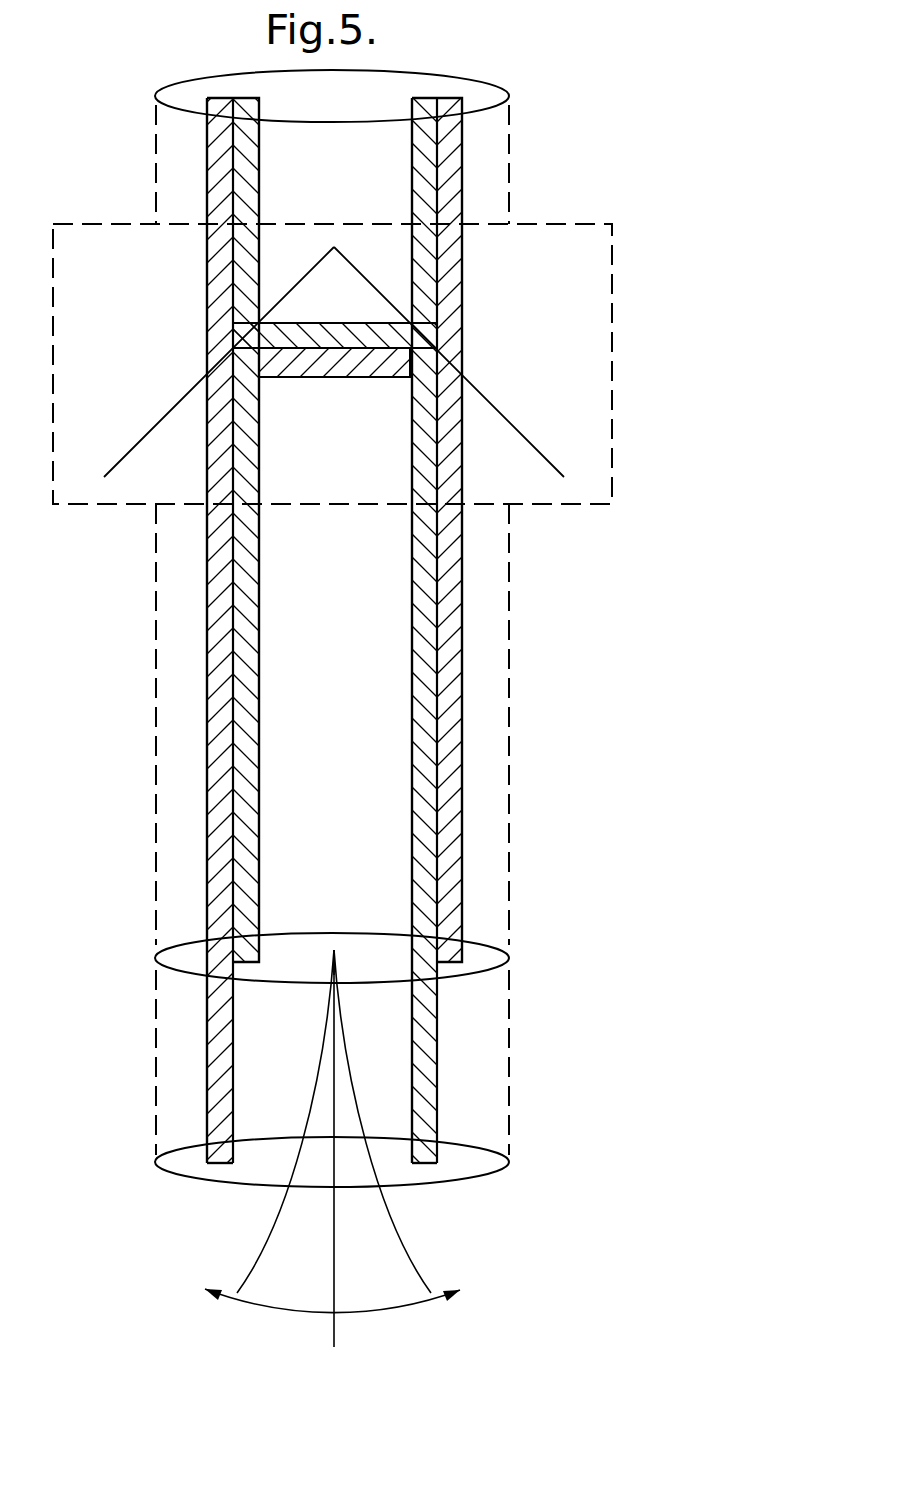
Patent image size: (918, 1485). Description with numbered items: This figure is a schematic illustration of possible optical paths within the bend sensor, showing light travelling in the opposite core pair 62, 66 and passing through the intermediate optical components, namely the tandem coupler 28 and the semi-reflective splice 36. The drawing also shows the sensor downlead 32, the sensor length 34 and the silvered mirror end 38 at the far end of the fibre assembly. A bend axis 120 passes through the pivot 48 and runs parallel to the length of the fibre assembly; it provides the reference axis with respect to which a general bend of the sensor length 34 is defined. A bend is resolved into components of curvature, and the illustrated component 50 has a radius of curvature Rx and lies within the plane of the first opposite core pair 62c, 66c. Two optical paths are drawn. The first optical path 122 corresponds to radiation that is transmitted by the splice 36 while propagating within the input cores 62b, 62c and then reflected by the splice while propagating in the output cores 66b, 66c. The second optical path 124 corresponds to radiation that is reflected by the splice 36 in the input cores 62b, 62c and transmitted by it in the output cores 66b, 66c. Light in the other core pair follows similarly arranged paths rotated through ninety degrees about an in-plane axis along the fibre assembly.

The tandem coupler 28 is at (614, 382).
The sensor downlead 32 is at (153, 756).
The sensor length 34 is at (153, 1008).
The semi-reflective splice 36 is at (498, 948).
The silvered mirror end 38 is at (480, 1163).
The pivot 48 is at (334, 950).
The component of curvature 50 is at (370, 1312).
The first core of opposite core pair 62 is at (232, 96).
The input core 62b is at (230, 650).
The input core in sensor length 62c is at (216, 1113).
The second core of opposite core pair 66 is at (437, 96).
The output core 66b is at (440, 632).
The output core in sensor length 66c is at (432, 1118).
The bend axis 120 is at (334, 1243).
The first optical path 122 is at (207, 855).
The second optical path 124 is at (248, 848).